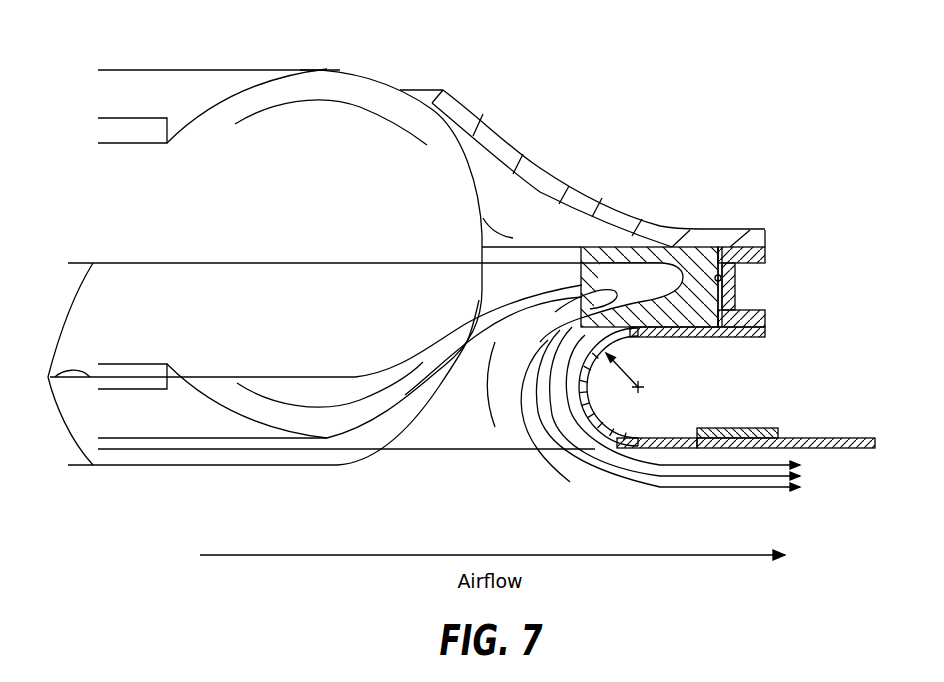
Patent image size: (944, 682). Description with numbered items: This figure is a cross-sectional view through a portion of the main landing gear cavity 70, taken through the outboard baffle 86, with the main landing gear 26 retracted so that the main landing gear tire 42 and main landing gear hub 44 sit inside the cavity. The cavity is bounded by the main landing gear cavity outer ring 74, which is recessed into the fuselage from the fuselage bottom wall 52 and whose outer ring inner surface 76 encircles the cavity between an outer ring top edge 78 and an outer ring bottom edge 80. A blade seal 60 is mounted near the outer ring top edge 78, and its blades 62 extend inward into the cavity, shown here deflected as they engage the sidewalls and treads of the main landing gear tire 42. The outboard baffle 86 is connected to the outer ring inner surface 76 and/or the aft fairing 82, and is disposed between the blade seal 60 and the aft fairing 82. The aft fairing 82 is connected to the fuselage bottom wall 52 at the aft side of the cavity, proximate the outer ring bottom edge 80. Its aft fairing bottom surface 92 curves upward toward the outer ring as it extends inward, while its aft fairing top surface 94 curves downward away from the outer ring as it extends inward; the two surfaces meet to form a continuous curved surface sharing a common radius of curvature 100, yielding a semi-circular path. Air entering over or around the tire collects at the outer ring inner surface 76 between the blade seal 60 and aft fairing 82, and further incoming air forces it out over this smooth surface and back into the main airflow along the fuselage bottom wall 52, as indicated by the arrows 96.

The main landing gear 26 is at (213, 52).
The main landing gear tire 42 is at (328, 122).
The main landing gear hub 44 is at (130, 132).
The blades 62 is at (515, 163).
The outboard baffle 86 is at (653, 257).
The blade seal 60 is at (725, 230).
The outer ring top edge 78 is at (755, 245).
The outer ring inner surface 76 is at (735, 273).
The main landing gear cavity outer ring 74 is at (735, 300).
The outer ring bottom edge 80 is at (745, 337).
The aft fairing bottom surface 92 is at (582, 430).
The aft fairing 82 is at (685, 448).
The fuselage bottom wall 52 is at (827, 437).
The aft fairing top surface 94 is at (528, 443).
The main landing gear cavity 70 is at (383, 476).
The arrows 96 is at (189, 364).
The radius of curvature 100 is at (640, 385).